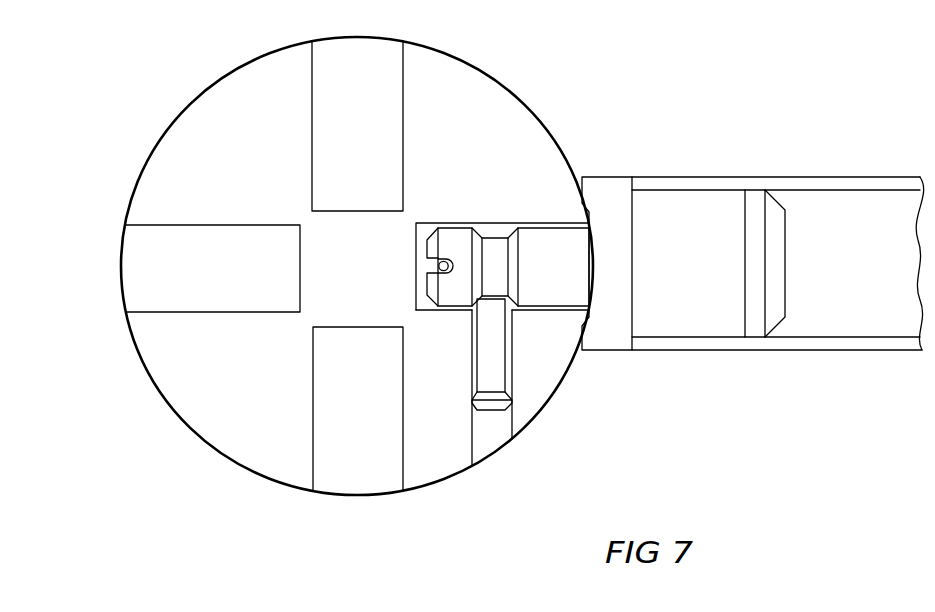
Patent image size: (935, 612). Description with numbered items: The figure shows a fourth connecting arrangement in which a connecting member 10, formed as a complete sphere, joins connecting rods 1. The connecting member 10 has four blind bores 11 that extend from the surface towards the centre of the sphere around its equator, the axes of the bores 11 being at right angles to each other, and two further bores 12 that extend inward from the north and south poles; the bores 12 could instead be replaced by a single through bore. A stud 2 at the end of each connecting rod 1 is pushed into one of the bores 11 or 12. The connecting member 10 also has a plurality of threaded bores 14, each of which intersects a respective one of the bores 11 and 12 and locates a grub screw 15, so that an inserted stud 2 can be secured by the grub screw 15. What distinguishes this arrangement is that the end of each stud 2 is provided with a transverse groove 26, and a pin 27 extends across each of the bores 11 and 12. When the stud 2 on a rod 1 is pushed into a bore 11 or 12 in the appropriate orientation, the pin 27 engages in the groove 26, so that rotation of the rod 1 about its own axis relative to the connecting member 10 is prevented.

The connecting rod 1 is at (770, 177).
The stud 2 is at (538, 252).
The connecting member 10 is at (463, 80).
The blind bore 11 is at (152, 266).
The bore 12 is at (317, 475).
The threaded bore 14 is at (472, 438).
The grub screw 15 is at (495, 370).
The transverse groove 26 is at (436, 262).
The pin 27 is at (443, 272).